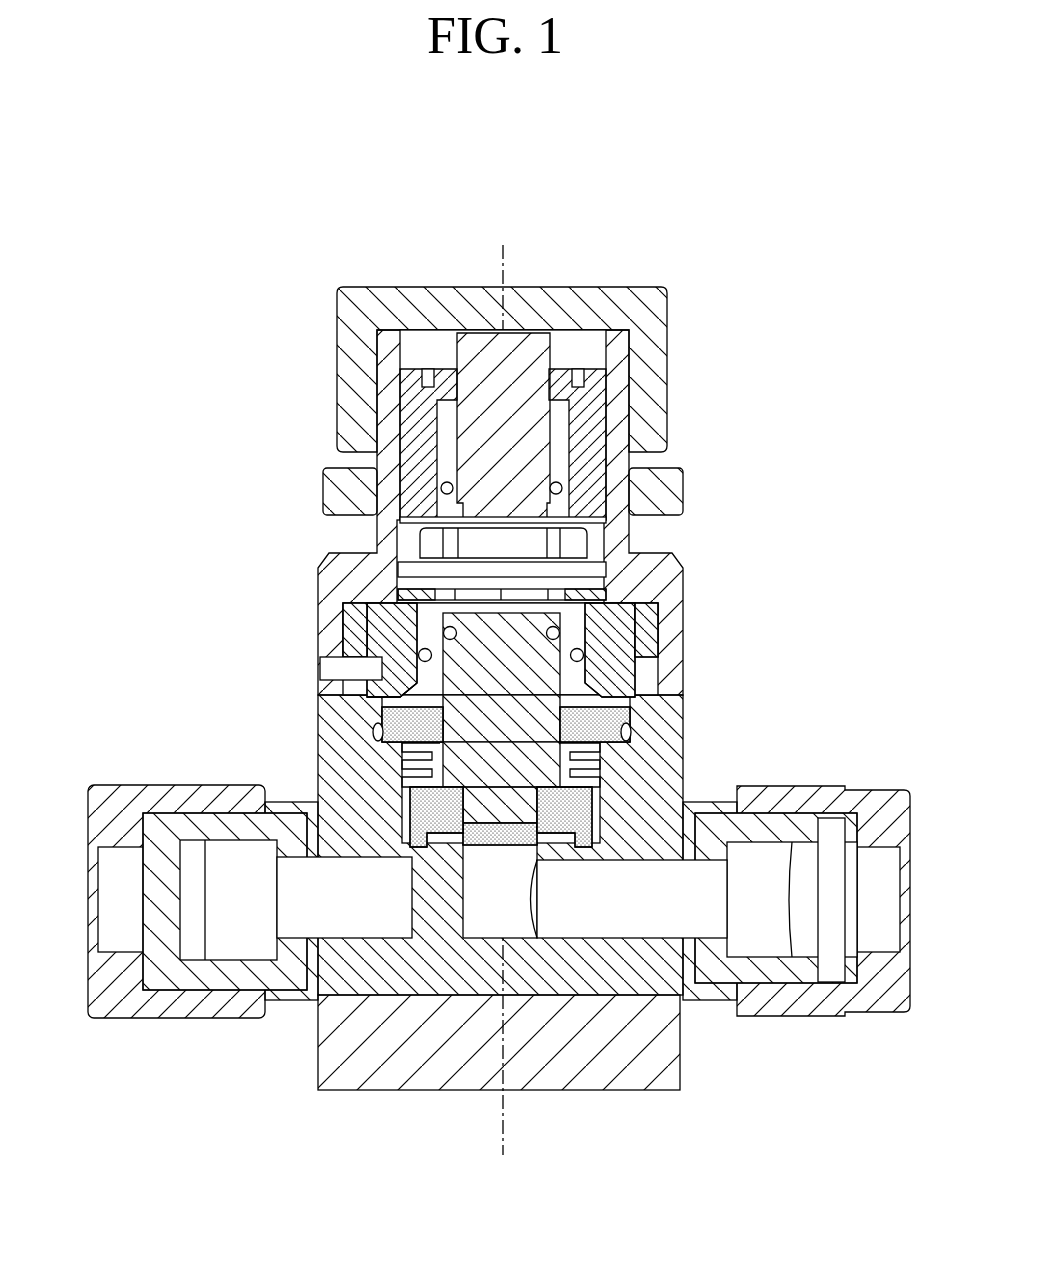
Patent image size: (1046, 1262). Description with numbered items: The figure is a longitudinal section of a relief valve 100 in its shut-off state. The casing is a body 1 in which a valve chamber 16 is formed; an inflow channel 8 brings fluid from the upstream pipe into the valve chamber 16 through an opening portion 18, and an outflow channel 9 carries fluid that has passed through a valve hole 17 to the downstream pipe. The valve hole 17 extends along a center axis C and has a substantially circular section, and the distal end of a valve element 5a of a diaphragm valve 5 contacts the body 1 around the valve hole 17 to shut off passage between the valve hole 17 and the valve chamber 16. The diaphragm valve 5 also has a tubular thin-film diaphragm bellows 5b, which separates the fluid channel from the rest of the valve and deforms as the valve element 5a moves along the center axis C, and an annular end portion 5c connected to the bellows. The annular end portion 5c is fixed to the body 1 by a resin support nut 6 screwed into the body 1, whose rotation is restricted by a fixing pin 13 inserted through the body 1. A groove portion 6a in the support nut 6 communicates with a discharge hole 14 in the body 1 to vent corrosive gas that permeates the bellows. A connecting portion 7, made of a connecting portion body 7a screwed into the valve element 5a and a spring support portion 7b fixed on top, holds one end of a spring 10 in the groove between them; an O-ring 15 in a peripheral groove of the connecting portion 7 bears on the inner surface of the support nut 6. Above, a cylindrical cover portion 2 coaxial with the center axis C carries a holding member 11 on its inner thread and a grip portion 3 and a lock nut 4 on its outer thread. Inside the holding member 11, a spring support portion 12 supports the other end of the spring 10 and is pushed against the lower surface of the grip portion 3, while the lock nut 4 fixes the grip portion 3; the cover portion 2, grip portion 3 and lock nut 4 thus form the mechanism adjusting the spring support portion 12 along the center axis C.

The relief valve 100 is at (399, 208).
The body 1 is at (665, 725).
The cover portion 2 is at (330, 568).
The grip portion 3 is at (345, 313).
The lock nut 4 is at (323, 478).
The diaphragm valve 5 is at (405, 763).
The valve element 5a is at (430, 800).
The diaphragm bellows 5b is at (405, 770).
The annular end portion 5c is at (385, 712).
The support nut 6 is at (650, 690).
The groove portion 6a is at (410, 694).
The connecting portion 7 is at (588, 587).
The connecting portion body 7a is at (569, 616).
The spring support portion 7b is at (600, 578).
The inflow channel 8 is at (330, 925).
The outflow channel 9 is at (627, 917).
The spring 10 is at (562, 488).
The holding member 11 is at (585, 399).
The spring support portion 12 is at (527, 345).
The fixing pin 13 is at (320, 656).
The discharge hole 14 is at (319, 700).
The O-ring 15 is at (590, 652).
The valve chamber 16 is at (597, 778).
The valve hole 17 is at (485, 893).
The opening portion 18 is at (405, 858).
The center axis C is at (505, 1116).